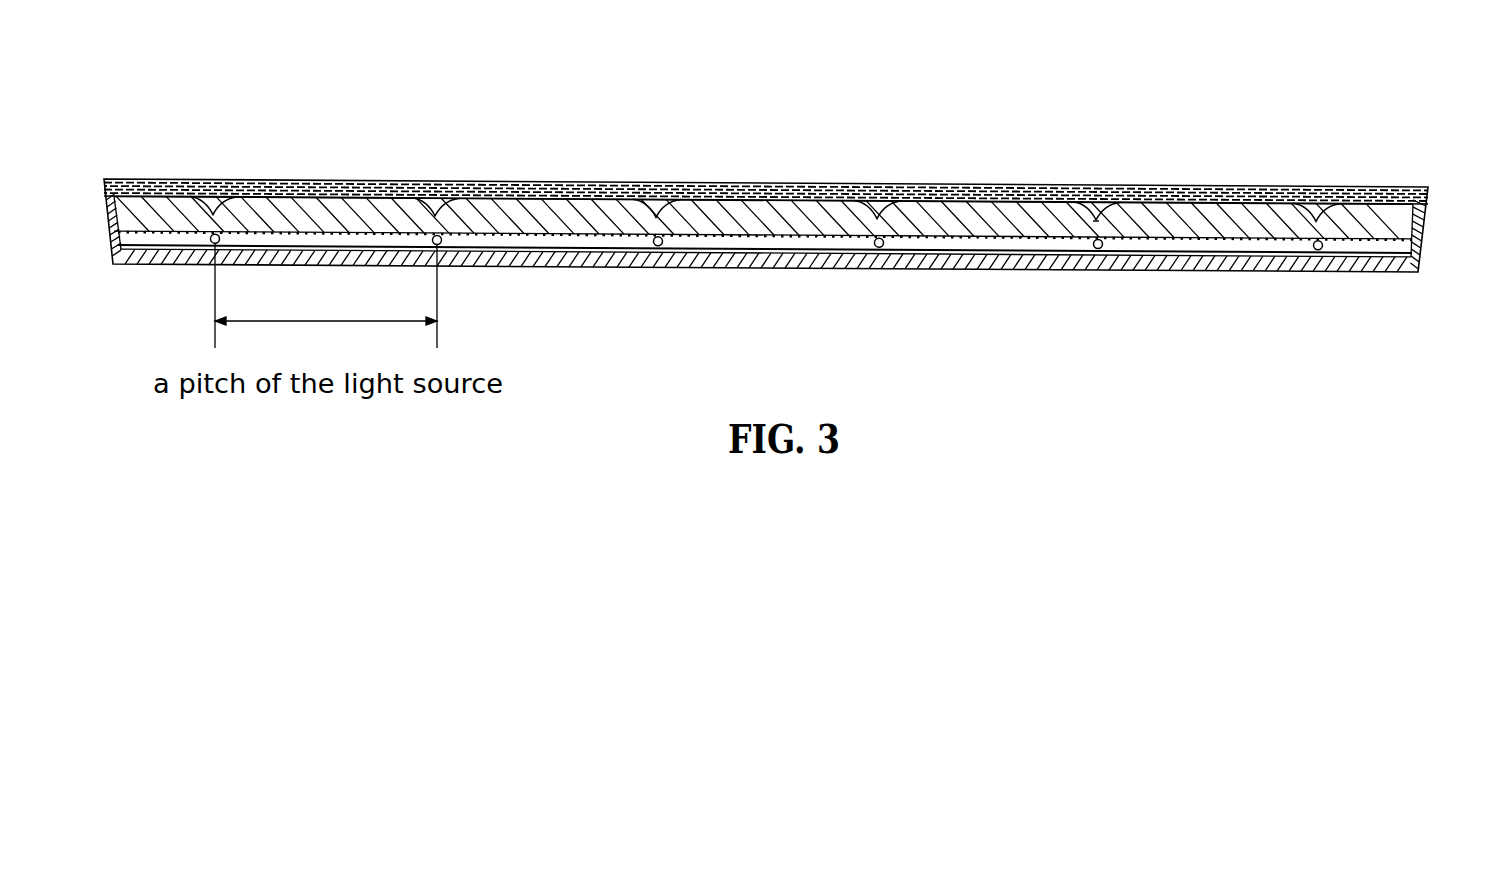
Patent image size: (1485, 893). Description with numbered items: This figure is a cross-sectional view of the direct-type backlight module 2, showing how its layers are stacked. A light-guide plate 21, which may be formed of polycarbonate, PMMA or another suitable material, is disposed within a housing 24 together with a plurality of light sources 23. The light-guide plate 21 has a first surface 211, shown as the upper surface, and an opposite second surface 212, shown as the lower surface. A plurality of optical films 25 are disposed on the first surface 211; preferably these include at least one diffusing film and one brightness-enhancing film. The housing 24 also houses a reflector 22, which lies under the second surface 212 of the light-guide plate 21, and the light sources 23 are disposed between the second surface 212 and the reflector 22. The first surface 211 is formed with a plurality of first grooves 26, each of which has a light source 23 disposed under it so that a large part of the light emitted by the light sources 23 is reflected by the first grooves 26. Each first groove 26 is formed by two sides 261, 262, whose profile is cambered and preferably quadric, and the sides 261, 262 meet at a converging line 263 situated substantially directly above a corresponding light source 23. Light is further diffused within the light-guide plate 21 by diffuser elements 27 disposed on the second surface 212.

The backlight module 2 is at (1300, 127).
The light-guide plate 21 is at (1420, 243).
The first surface 211 is at (1375, 197).
The second surface 212 is at (1362, 255).
The reflector 22 is at (1266, 266).
The light source 23 is at (1094, 252).
The housing 24 is at (1326, 267).
The optical films 25 is at (1432, 188).
The first groove 26 is at (765, 226).
The side 261 is at (1078, 218).
The side 262 is at (1110, 216).
The converging line 263 is at (1120, 210).
The diffuser elements 27 is at (1220, 249).